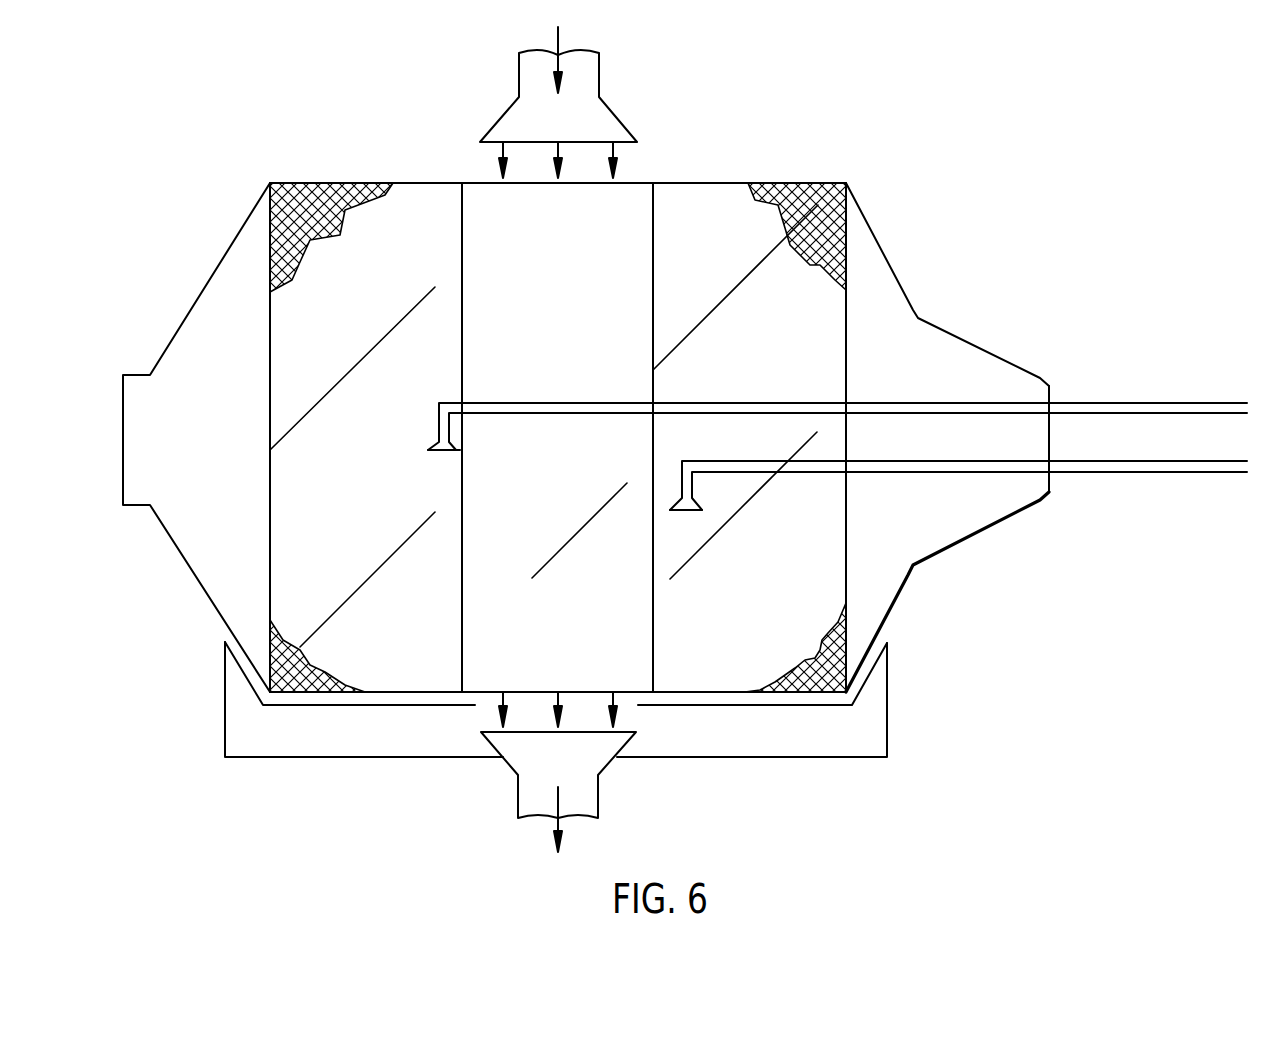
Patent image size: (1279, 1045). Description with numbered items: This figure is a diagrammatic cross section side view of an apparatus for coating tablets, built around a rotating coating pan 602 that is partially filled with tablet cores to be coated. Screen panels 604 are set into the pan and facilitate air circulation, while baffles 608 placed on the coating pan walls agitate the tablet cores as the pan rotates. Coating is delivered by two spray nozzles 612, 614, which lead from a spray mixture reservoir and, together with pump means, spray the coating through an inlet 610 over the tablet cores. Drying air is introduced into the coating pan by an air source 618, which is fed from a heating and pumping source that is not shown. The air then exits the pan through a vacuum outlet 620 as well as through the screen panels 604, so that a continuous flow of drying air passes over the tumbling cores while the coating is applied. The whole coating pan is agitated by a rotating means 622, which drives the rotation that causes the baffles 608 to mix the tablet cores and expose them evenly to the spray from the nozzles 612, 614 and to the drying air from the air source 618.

The rotating coating pan 602 is at (183, 562).
The screen panels 604 is at (317, 183).
The baffles 608 is at (270, 453).
The inlet 610 is at (1040, 380).
The spray nozzle 612 is at (702, 502).
The spray nozzle 614 is at (436, 442).
The air source 618 is at (599, 67).
The vacuum outlet 620 is at (518, 787).
The rotating means 622 is at (225, 698).